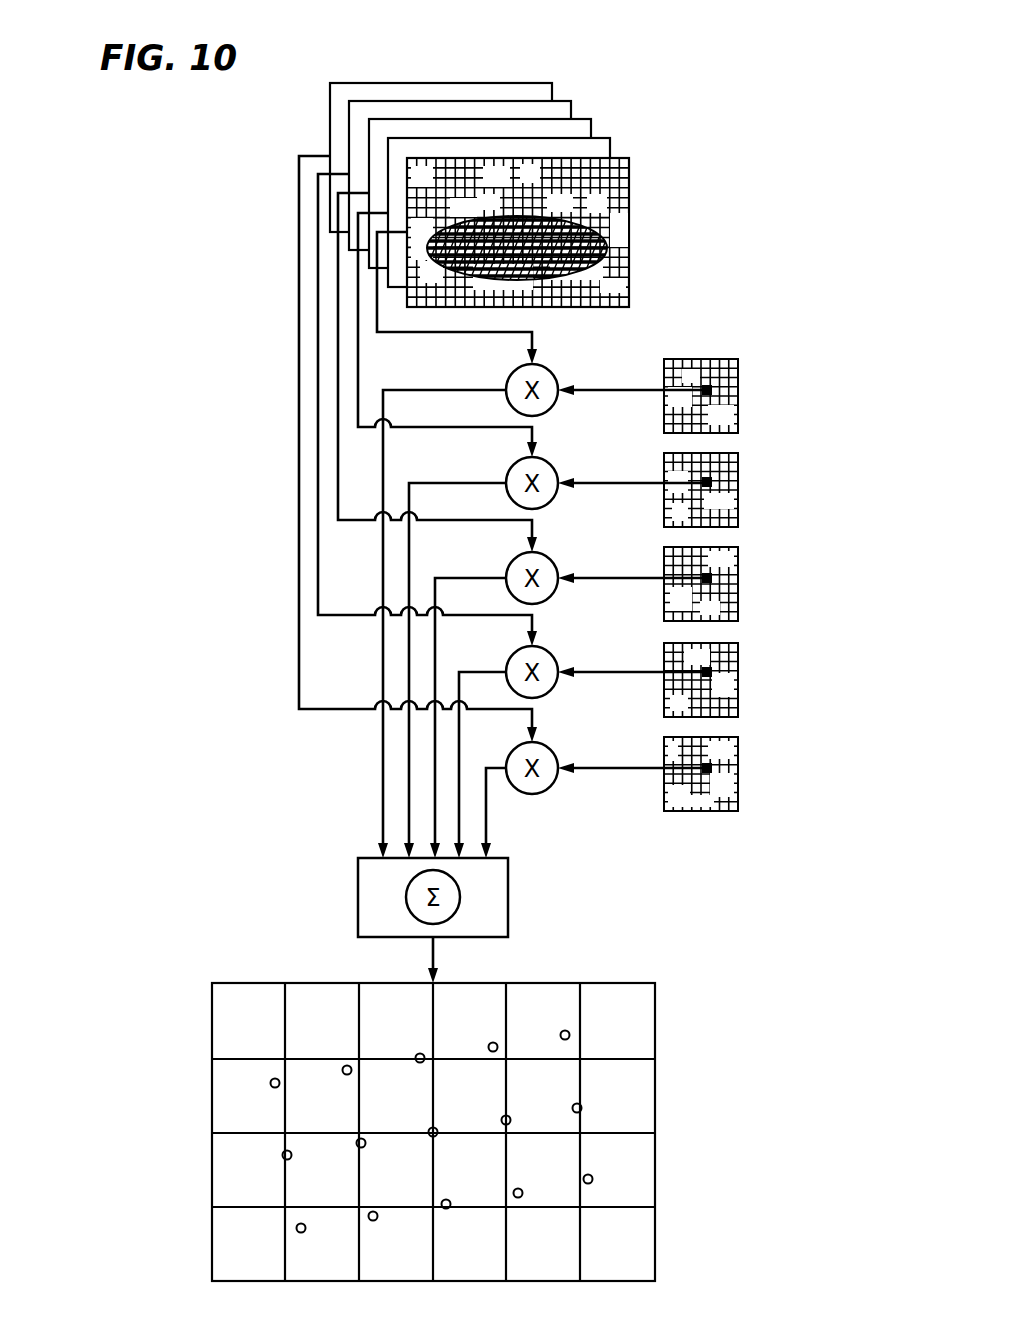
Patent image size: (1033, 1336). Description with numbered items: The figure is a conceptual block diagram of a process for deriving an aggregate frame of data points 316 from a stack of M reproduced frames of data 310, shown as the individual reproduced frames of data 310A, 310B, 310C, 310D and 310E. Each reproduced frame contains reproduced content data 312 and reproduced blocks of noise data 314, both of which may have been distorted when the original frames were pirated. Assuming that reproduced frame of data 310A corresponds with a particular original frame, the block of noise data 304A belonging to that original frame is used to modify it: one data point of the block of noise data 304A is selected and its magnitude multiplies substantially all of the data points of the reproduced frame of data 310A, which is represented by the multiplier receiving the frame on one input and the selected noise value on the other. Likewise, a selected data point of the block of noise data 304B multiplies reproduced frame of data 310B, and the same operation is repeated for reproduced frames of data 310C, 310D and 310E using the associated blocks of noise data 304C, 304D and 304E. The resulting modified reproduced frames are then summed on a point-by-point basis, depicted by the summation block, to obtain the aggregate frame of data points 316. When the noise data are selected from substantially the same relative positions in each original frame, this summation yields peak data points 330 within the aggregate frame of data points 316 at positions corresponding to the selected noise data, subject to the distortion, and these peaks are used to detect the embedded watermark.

The reproduced frames of data 310 is at (515, 162).
The reproduced frame of data 310A is at (568, 214).
The reproduced frame of data 310B is at (612, 138).
The reproduced frame of data 310C is at (592, 119).
The reproduced frame of data 310D is at (573, 101).
The reproduced frame of data 310E is at (555, 83).
The reproduced blocks of noise data 314 is at (612, 184).
The reproduced content data 312 is at (604, 279).
The block of noise data 304A is at (740, 385).
The block of noise data 304B is at (740, 479).
The block of noise data 304C is at (740, 573).
The block of noise data 304D is at (740, 672).
The block of noise data 304E is at (740, 769).
The aggregate frame of data points 316 is at (433, 1106).
The peak data points 330 is at (562, 1030).